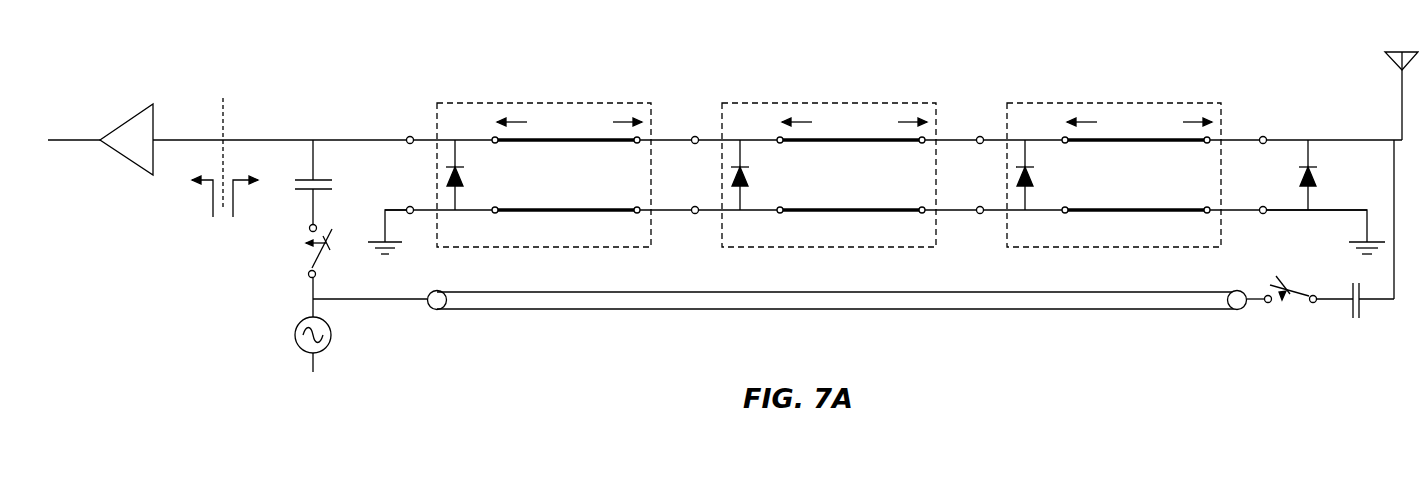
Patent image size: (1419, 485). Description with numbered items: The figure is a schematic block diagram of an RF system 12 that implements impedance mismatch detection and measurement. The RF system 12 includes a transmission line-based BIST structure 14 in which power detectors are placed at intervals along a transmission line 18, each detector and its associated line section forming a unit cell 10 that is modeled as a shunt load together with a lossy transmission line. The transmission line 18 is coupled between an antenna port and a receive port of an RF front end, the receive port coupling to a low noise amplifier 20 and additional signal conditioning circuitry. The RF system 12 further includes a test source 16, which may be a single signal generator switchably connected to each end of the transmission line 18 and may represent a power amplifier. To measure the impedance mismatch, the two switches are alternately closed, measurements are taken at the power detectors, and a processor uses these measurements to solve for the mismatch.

The unit cell 10 is at (598, 103).
The RF system 12 is at (122, 38).
The transmission line-based BIST structure 14 is at (368, 57).
The test source 16 is at (331, 338).
The transmission line 18 is at (607, 210).
The low noise amplifier 20 is at (130, 120).